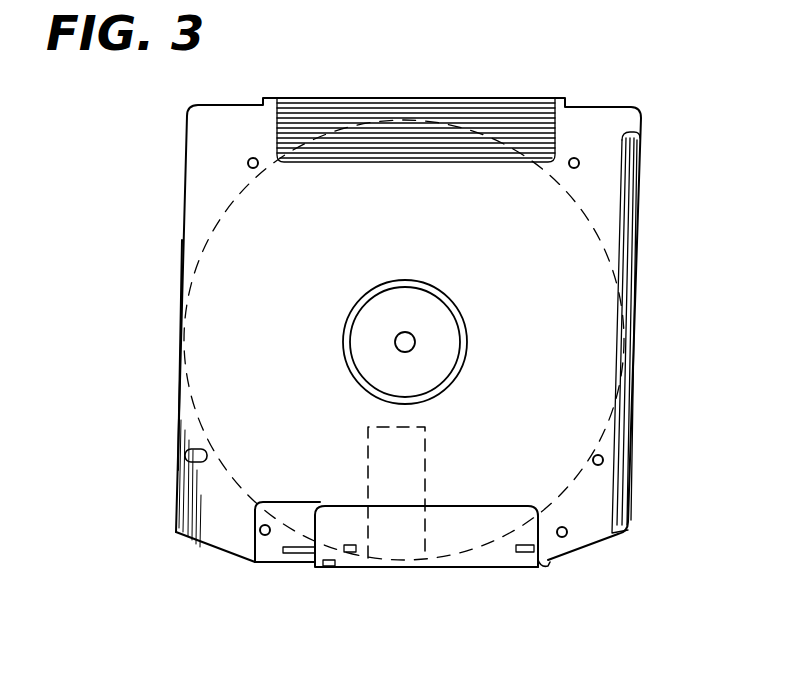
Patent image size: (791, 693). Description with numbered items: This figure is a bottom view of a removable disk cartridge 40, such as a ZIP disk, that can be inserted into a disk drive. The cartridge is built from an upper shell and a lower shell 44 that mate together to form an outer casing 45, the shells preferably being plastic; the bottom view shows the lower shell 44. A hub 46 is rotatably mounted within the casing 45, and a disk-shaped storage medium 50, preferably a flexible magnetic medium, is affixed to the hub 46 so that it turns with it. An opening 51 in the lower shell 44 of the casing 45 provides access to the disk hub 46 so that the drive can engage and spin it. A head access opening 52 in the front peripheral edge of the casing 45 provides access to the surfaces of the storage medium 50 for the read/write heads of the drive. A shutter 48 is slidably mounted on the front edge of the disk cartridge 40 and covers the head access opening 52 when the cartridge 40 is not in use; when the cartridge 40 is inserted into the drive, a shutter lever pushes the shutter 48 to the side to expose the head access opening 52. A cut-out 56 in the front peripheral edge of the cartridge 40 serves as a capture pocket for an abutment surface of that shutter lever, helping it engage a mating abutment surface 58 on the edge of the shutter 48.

The removable disk cartridge 40 is at (138, 148).
The lower shell 44 is at (605, 117).
The outer casing 45 is at (181, 356).
The hub 46 is at (407, 288).
The shutter 48 is at (487, 572).
The disk-shaped storage medium 50 is at (588, 204).
The opening 51 is at (467, 320).
The head access opening 52 is at (392, 580).
The cut-out 56 is at (550, 562).
The mating abutment surface 58 is at (546, 568).